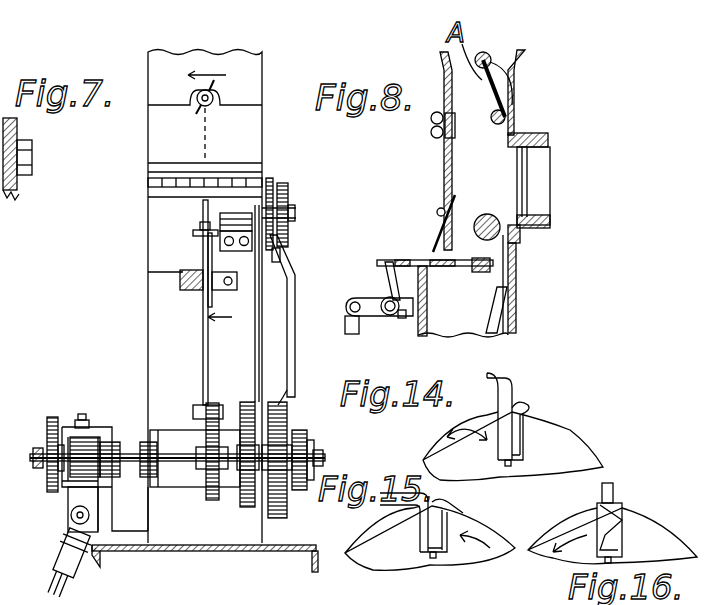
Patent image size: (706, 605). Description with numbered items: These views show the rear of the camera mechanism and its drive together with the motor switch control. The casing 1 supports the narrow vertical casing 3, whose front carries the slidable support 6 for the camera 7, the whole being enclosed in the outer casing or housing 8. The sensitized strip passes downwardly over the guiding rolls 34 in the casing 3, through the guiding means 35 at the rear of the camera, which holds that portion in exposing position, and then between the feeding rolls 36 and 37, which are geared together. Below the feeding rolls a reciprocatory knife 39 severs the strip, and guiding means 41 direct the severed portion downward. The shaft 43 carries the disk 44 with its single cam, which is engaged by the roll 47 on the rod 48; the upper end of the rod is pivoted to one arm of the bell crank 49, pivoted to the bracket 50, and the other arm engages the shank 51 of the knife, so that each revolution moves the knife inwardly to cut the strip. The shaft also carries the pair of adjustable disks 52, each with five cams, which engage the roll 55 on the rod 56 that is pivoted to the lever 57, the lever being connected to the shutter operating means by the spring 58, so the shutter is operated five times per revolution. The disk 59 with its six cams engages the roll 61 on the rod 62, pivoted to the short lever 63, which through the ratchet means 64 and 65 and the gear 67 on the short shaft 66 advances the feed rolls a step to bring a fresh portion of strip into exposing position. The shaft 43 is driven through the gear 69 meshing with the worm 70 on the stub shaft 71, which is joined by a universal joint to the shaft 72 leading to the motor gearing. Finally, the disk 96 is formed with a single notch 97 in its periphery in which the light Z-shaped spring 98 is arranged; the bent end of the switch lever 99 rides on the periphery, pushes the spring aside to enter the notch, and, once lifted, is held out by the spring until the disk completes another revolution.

In FIG. 7, the casing 1 is at (270, 549).
In FIG. 7, the narrow vertical casing 3 is at (148, 200).
In FIG. 8, the narrow vertical casing 3 is at (518, 325).
In FIG. 8, the slidable support 6 is at (535, 133).
In FIG. 8, the camera 7 is at (550, 200).
In FIG. 7, the casing or housing 8 is at (210, 199).
In FIG. 8, the guiding rolls 34 is at (508, 112).
In FIG. 8, the guiding means 35 is at (500, 165).
In FIG. 8, the feeding roll 36 is at (486, 215).
In FIG. 8, the feeding roll 37 is at (518, 244).
In FIG. 8, the reciprocatory knife 39 is at (478, 272).
In FIG. 8, the guiding means 41 is at (512, 312).
In FIG. 7, the shaft 43 is at (128, 455).
In FIG. 7, the disk 44 is at (212, 498).
In FIG. 7, the roll 47 is at (205, 400).
In FIG. 7, the rod 48 is at (203, 350).
In FIG. 8, the rod 48 is at (350, 305).
In FIG. 7, the bell crank 49 is at (204, 255).
In FIG. 8, the bell crank 49 is at (386, 284).
In FIG. 7, the bracket 50 is at (180, 273).
In FIG. 8, the bracket 50 is at (402, 318).
In FIG. 7, the shank 51 is at (195, 236).
In FIG. 8, the shank 51 is at (400, 259).
In FIG. 7, the disks 52 is at (246, 506).
In FIG. 7, the roll 55 is at (247, 403).
In FIG. 7, the rod 56 is at (256, 353).
In FIG. 7, the lever 57 is at (262, 210).
In FIG. 7, the spring 58 is at (18, 196).
In FIG. 7, the disk 59 is at (280, 496).
In FIG. 7, the roll 61 is at (284, 395).
In FIG. 7, the rod 62 is at (296, 348).
In FIG. 7, the short lever 63 is at (285, 242).
In FIG. 7, the ratchet means 64 is at (300, 212).
In FIG. 7, the ratchet means 65 is at (275, 180).
In FIG. 7, the short shaft 66 is at (205, 224).
In FIG. 7, the gear 67 is at (282, 190).
In FIG. 7, the gear 69 is at (82, 420).
In FIG. 7, the worm 70 is at (72, 455).
In FIG. 7, the stub shaft 71 is at (72, 510).
In FIG. 7, the shaft 72 is at (62, 570).
In FIG. 7, the disk 96 is at (46, 446).
In FIG. 14, the disk 96 is at (585, 457).
In FIG. 15, the disk 96 is at (385, 540).
In FIG. 16, the disk 96 is at (580, 522).
In FIG. 14, the notch 97 is at (525, 432).
In FIG. 15, the notch 97 is at (447, 530).
In FIG. 16, the notch 97 is at (624, 540).
In FIG. 7, the light spring 98 is at (53, 418).
In FIG. 14, the light spring 98 is at (528, 406).
In FIG. 15, the light spring 98 is at (428, 530).
In FIG. 16, the light spring 98 is at (622, 526).
In FIG. 14, the switch lever 99 is at (515, 378).
In FIG. 15, the switch lever 99 is at (440, 497).
In FIG. 16, the switch lever 99 is at (615, 490).